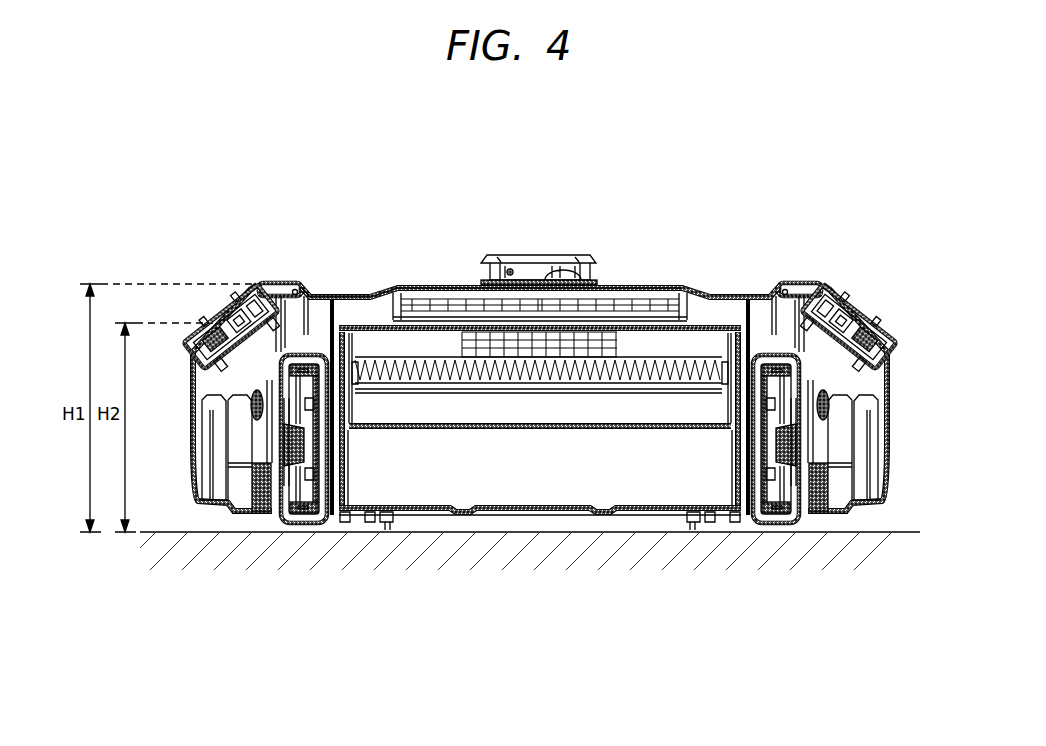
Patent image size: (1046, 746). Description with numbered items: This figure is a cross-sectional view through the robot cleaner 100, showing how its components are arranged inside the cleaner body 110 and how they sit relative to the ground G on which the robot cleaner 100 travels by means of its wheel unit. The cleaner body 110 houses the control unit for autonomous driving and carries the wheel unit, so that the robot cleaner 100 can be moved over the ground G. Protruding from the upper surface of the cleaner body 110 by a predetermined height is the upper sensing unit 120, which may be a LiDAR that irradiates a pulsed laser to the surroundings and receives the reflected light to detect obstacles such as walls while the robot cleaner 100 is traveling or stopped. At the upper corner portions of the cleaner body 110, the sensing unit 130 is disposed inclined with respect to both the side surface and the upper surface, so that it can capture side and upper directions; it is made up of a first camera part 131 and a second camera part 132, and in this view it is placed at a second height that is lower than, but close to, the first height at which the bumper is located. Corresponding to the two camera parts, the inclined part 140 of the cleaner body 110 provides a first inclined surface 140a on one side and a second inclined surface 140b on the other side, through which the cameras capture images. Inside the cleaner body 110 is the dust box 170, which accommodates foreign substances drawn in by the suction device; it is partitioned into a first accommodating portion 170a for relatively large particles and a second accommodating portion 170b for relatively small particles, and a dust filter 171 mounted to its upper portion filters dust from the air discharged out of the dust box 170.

The robot cleaner 100 is at (236, 236).
The cleaner body 110 is at (361, 295).
The upper sensing unit 120 is at (596, 261).
The sensing unit 130 is at (593, 120).
The first camera part 131 is at (240, 302).
The second camera part 132 is at (840, 302).
The inclined part 140 is at (593, 180).
The first inclined surface 140a is at (254, 296).
The second inclined surface 140b is at (826, 296).
The dust box 170 is at (593, 638).
The first accommodating portion 170a is at (512, 478).
The second accommodating portion 170b is at (543, 408).
The dust filter 171 is at (403, 378).
The ground G is at (895, 532).